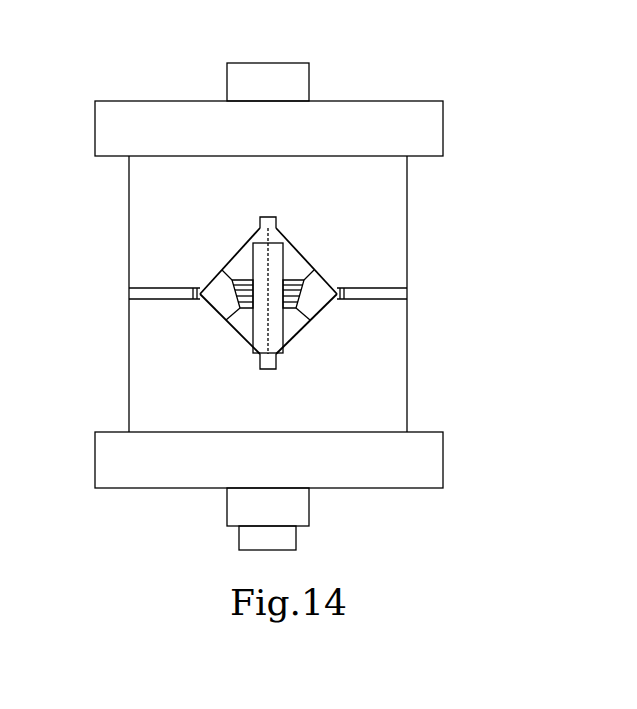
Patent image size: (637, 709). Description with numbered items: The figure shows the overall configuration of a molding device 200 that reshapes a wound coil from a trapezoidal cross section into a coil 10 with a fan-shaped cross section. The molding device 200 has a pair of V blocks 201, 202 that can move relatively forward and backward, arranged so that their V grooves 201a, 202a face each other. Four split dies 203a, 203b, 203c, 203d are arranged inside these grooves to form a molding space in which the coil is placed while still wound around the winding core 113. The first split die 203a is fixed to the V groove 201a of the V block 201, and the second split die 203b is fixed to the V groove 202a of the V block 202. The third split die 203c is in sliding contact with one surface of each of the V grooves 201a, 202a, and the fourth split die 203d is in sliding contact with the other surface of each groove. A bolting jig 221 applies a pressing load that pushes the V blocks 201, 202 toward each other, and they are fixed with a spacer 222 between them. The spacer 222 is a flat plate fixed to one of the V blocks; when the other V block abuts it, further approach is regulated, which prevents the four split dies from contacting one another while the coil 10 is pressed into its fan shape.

The molding device 200 is at (398, 58).
The V block 201 is at (128, 201).
The V groove 201a is at (300, 267).
The V block 202 is at (128, 368).
The V groove 202a is at (235, 322).
The first split die 203a is at (231, 252).
The second split die 203b is at (300, 322).
The third split die 203c is at (212, 310).
The fourth split die 203d is at (320, 308).
The coil 10 is at (300, 292).
The winding core 113 is at (242, 267).
The bolting jig 221 is at (280, 73).
The spacer 222 is at (128, 296).